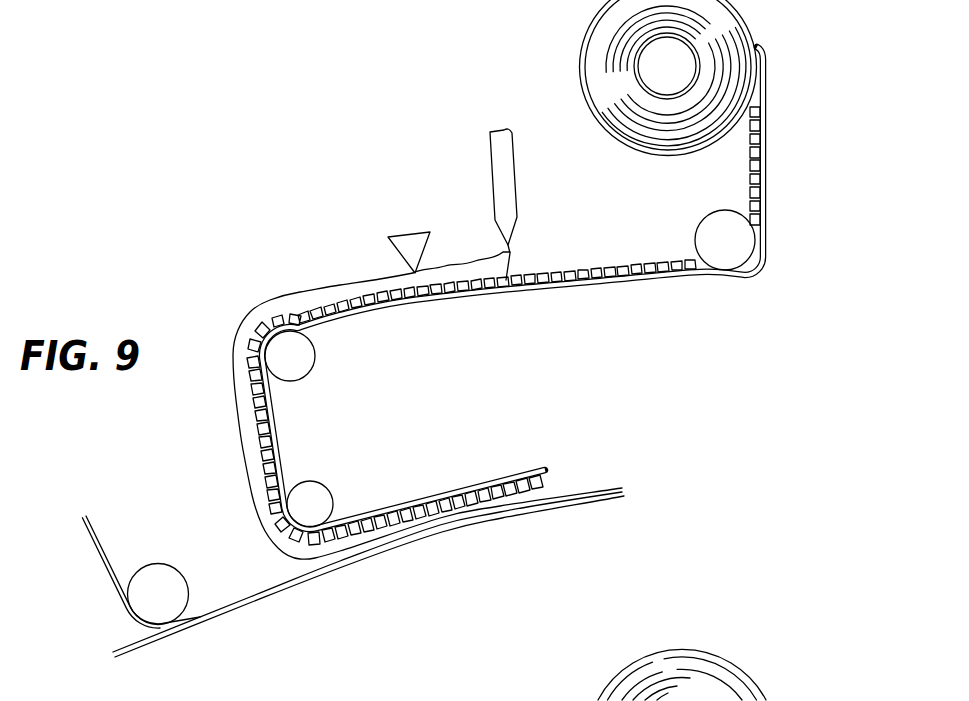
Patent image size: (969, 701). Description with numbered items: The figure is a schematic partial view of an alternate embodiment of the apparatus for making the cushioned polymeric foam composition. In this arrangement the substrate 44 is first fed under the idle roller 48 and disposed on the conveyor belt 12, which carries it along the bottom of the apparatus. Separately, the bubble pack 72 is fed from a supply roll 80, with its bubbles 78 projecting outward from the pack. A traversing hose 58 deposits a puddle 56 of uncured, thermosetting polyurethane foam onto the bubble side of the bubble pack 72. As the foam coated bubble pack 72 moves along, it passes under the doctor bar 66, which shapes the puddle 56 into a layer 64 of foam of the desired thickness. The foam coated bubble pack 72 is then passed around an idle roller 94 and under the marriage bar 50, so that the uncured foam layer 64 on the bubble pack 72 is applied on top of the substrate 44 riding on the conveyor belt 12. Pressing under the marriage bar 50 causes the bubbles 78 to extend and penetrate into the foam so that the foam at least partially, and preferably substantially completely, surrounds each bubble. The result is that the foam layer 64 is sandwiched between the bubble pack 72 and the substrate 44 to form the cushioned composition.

The conveyor belt 12 is at (133, 648).
The substrate 44 is at (98, 550).
The idle roller 48 is at (163, 582).
The marriage bar 50 is at (313, 498).
The puddle 56 is at (458, 273).
The traversing hose 58 is at (490, 162).
The layer of foam 64 is at (232, 373).
The doctor bar 66 is at (403, 249).
The bubble pack 72 is at (604, 282).
The bubbles 78 is at (598, 268).
The supply roll 80 is at (578, 72).
The idle roller 94 is at (298, 362).